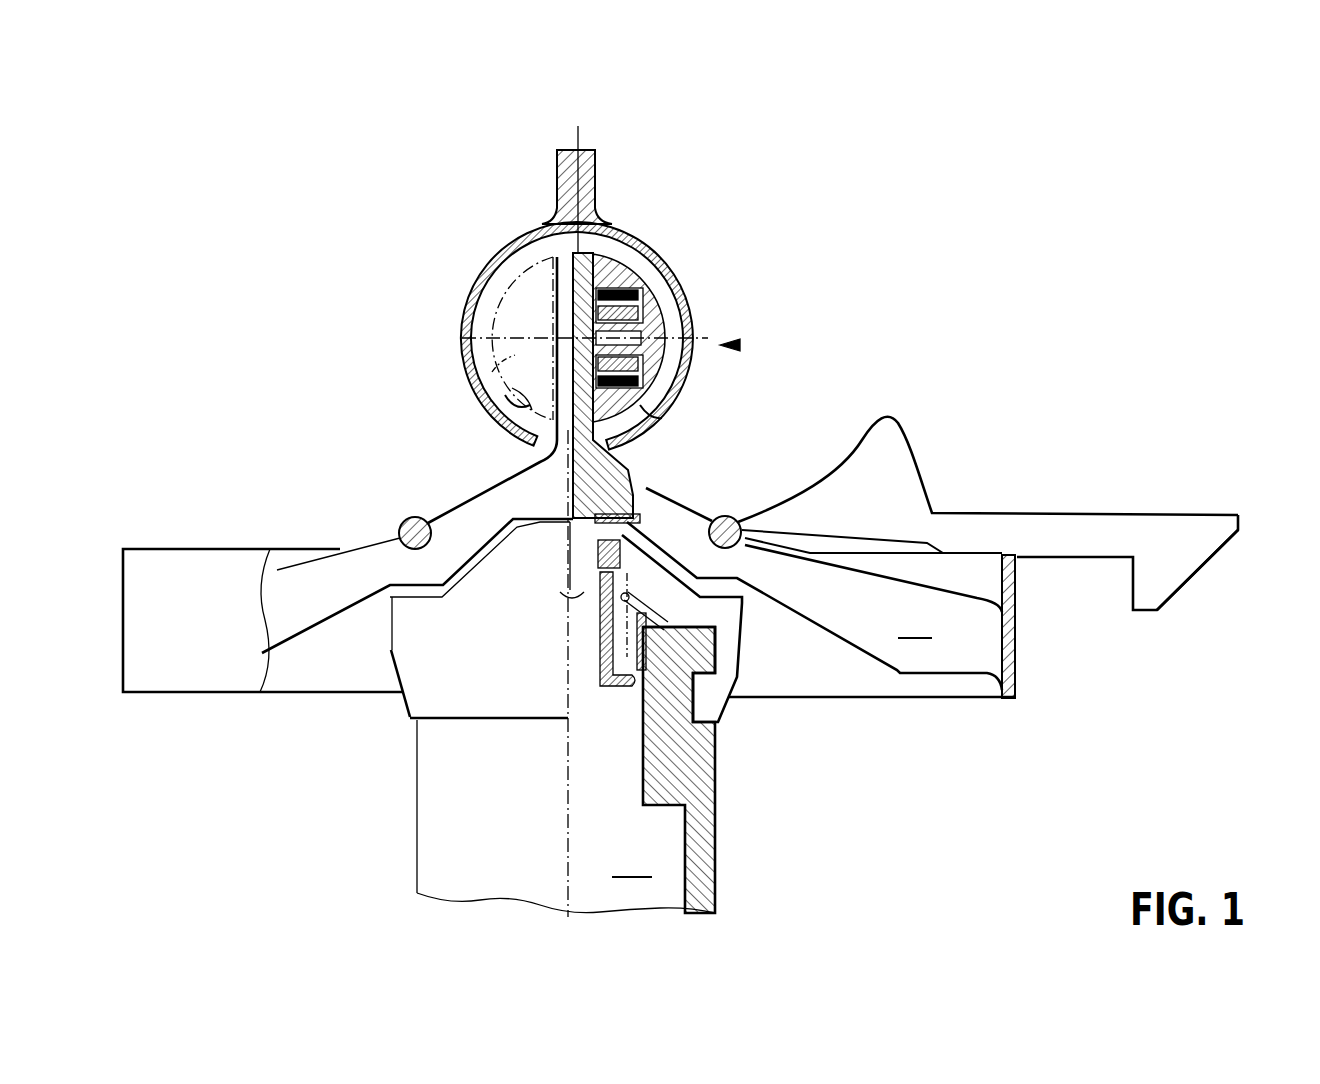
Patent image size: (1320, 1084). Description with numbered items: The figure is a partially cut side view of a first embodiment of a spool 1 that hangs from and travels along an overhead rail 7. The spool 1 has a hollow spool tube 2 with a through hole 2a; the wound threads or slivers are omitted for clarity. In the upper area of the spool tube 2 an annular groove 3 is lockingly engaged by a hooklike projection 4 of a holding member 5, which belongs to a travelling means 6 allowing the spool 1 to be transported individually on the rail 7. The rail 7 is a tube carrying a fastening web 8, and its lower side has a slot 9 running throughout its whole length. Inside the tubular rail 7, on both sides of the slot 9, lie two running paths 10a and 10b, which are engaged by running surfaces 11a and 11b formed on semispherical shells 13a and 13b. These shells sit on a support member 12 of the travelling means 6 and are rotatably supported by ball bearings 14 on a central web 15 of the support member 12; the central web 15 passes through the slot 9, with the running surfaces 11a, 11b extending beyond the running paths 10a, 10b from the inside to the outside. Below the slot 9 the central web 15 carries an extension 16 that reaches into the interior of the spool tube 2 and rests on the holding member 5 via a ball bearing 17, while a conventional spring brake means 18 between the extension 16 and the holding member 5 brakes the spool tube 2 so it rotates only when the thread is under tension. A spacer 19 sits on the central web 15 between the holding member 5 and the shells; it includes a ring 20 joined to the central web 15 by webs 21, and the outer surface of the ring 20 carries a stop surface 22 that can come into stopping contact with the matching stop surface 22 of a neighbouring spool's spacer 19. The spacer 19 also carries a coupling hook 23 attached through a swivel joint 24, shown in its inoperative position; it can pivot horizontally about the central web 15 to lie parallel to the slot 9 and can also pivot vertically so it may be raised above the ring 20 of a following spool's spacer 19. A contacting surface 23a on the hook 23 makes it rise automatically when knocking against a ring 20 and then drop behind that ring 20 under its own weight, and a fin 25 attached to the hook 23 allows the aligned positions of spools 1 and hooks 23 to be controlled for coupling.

The spool 1 is at (280, 792).
The spool tube 2 is at (700, 855).
The through hole 2a is at (566, 880).
The annular groove 3 is at (712, 728).
The hooklike projection 4 is at (722, 690).
The holding member 5 is at (735, 625).
The travelling means 6 is at (740, 345).
The rail 7 is at (470, 278).
The fastening web 8 is at (600, 185).
The slot 9 is at (546, 436).
The running path 10a is at (507, 414).
The running path 10b is at (645, 420).
The running surface 11a is at (482, 372).
The running surface 11b is at (660, 412).
The support member 12 is at (632, 272).
The semispherical shell 13a is at (490, 298).
The semispherical shell 13b is at (640, 276).
The ball bearings 14 is at (655, 300).
The central web 15 is at (557, 255).
The extension 16 is at (600, 629).
The ball bearing 17 is at (650, 514).
The spring brake means 18 is at (600, 660).
The spacer 19 is at (297, 525).
The ring 20 is at (1017, 632).
The webs 21 is at (821, 609).
The stop surface 22 is at (1017, 662).
The hook 23 is at (1093, 538).
The contacting surface 23a is at (1212, 577).
The swivel joint 24 is at (405, 520).
The fin 25 is at (893, 457).